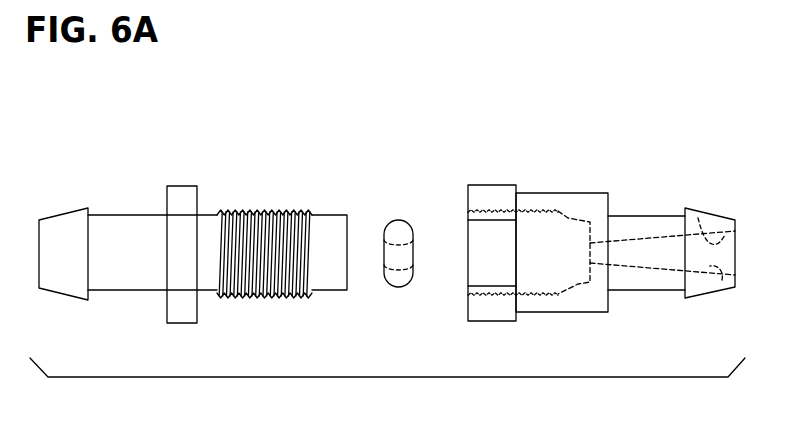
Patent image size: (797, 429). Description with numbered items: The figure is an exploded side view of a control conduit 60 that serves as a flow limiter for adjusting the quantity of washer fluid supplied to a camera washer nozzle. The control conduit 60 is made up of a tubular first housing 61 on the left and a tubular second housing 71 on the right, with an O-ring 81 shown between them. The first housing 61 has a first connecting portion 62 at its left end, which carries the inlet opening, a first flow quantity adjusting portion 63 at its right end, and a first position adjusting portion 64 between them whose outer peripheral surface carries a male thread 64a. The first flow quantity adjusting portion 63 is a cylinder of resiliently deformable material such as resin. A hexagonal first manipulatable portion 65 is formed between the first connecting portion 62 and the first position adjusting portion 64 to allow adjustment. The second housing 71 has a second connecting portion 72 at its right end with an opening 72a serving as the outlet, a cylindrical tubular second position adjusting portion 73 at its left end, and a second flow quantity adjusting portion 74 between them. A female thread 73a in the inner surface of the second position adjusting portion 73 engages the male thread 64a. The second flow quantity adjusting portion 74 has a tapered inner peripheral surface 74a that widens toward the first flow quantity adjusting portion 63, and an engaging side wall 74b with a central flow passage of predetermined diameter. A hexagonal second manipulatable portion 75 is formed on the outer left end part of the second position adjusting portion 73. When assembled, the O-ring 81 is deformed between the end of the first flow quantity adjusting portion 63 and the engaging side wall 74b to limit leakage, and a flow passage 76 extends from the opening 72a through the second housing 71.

The control conduit 60 is at (98, 120).
The first housing 61 is at (129, 181).
The first connecting portion 62 is at (49, 220).
The first flow quantity adjusting portion 63 is at (333, 215).
The first position adjusting portion 64 is at (237, 210).
The male thread 64a is at (283, 210).
The first manipulatable portion 65 is at (182, 186).
The second housing 71 is at (654, 164).
The second connecting portion 72 is at (726, 220).
The opening 72a is at (698, 218).
The second position adjusting portion 73 is at (537, 193).
The female thread 73a is at (490, 222).
The second flow quantity adjusting portion 74 is at (582, 193).
The inner peripheral surface 74a is at (568, 219).
The engaging side wall 74b is at (583, 276).
The second manipulatable portion 75 is at (490, 185).
The flow passage 76 is at (720, 283).
The O-ring 81 is at (396, 220).